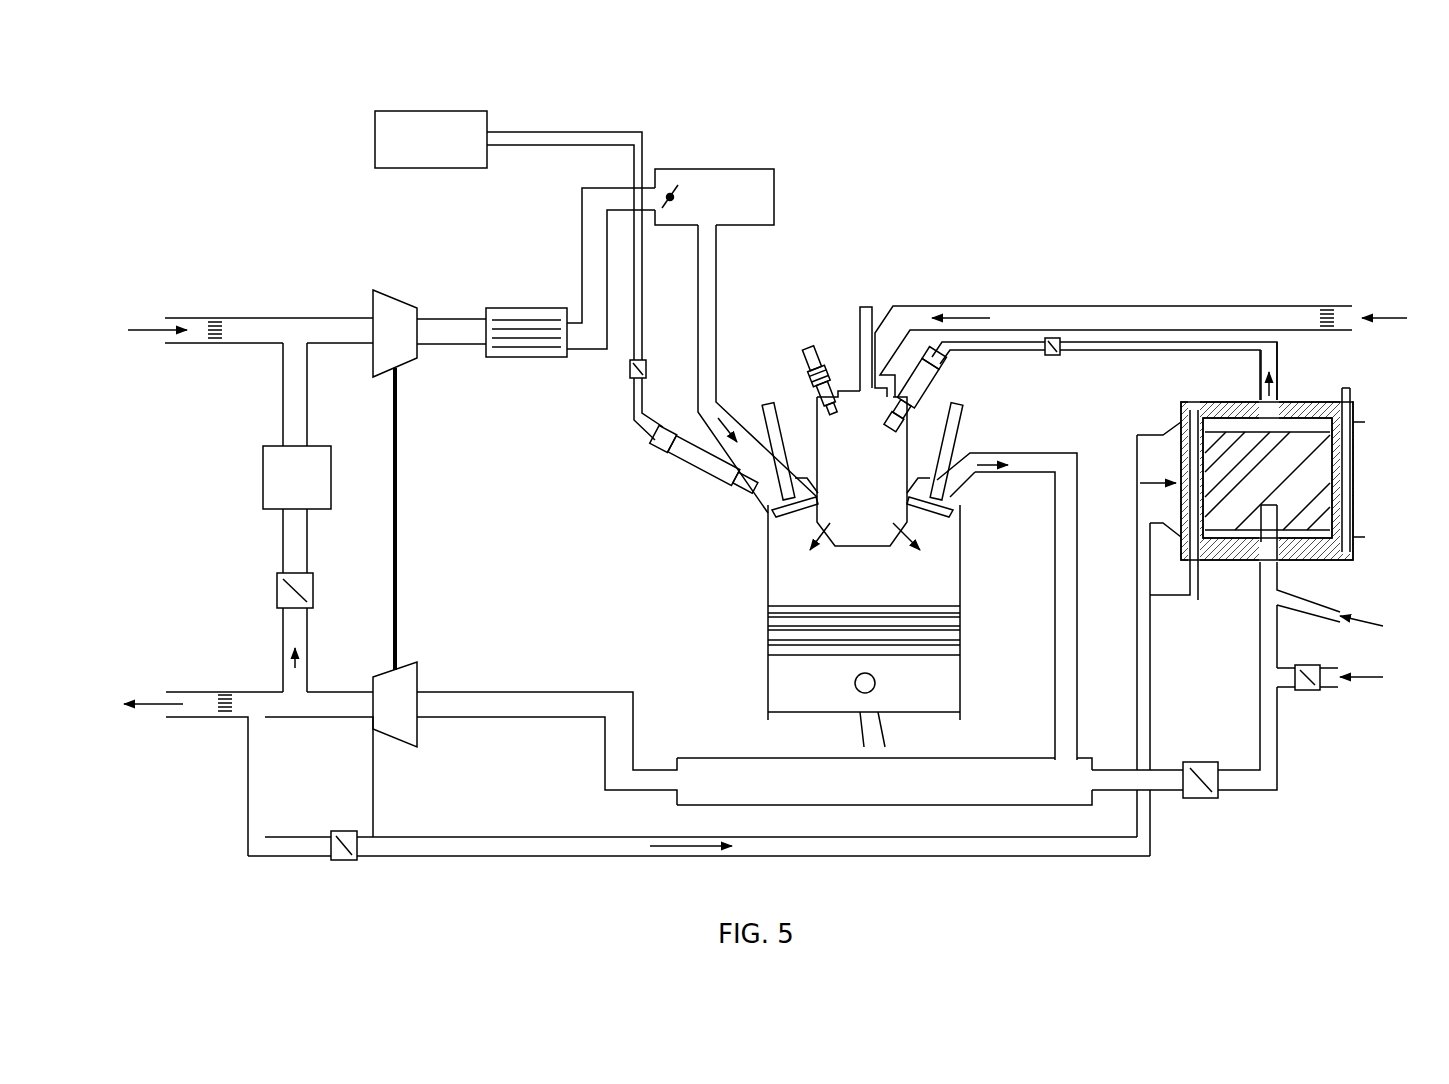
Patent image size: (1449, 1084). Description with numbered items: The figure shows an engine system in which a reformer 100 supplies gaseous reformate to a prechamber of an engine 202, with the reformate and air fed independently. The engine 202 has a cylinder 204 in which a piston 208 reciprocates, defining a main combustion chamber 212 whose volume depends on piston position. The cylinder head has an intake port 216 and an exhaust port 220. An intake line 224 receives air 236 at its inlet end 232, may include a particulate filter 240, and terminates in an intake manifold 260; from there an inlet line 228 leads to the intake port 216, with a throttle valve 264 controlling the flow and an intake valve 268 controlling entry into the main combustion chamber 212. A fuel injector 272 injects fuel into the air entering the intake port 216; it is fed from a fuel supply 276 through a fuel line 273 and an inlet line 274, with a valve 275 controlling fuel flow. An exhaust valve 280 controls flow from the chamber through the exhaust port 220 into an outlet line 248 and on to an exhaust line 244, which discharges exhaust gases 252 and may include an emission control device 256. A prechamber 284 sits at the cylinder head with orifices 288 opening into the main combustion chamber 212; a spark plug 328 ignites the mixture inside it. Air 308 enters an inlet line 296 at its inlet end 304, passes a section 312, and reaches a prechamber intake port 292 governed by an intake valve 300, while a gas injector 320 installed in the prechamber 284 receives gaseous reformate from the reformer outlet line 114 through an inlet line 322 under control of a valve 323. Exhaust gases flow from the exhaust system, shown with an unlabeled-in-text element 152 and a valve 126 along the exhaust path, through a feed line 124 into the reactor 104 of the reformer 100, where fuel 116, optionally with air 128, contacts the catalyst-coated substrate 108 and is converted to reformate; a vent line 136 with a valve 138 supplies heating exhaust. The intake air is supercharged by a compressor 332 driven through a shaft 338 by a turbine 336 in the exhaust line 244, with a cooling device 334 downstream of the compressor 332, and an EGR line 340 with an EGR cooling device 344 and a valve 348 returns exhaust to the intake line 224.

The reformer 100 is at (1355, 413).
The reactor 104 is at (1330, 453).
The catalyst-coated substrate 108 is at (1325, 510).
The outlet line 114 is at (1279, 378).
The fuel 116 is at (1351, 600).
The feed line 124 is at (1240, 793).
The valve 126 is at (1200, 798).
The air 128 is at (1351, 648).
The vent line 136 is at (1152, 708).
The valve 138 is at (345, 860).
The exhaust passage 152 is at (718, 767).
The engine 202 is at (877, 288).
The engine cylinder 204 is at (767, 566).
The piston 208 is at (955, 610).
The main combustion chamber 212 is at (777, 590).
The intake port 216 is at (772, 514).
The exhaust port 220 is at (962, 522).
The intake line 224 is at (582, 253).
The inlet line 228 is at (710, 270).
The inlet end 232 is at (182, 318).
The air 236 is at (135, 330).
The particulate filter 240 is at (216, 340).
The exhaust line 244 is at (615, 790).
The outlet line 248 is at (1023, 460).
The exhaust gases 252 is at (133, 704).
The exhaust emission control device 256 is at (225, 692).
The intake manifold 260 is at (790, 196).
The throttle valve 264 is at (672, 192).
The intake valve 268 is at (767, 499).
The fuel injector 272 is at (682, 453).
The fuel line 273 is at (587, 130).
The inlet line 274 is at (632, 410).
The valve 275 is at (630, 367).
The fuel supply 276 is at (432, 125).
The exhaust valve 280 is at (945, 495).
The prechamber 284 is at (815, 415).
The orifices 288 is at (897, 528).
The intake port 292 is at (838, 392).
The inlet line 296 is at (940, 305).
The intake valve 300 is at (856, 387).
The inlet end 304 is at (1348, 308).
The air 308 is at (1405, 318).
The section 312 is at (1263, 306).
The gas injector 320 is at (930, 380).
The inlet line 322 is at (1113, 352).
The valve 323 is at (1052, 338).
The spark plug 328 is at (802, 360).
The compressor 332 is at (395, 298).
The cooling device 334 is at (505, 358).
The turbine 336 is at (397, 740).
The shaft 338 is at (397, 528).
The EGR line 340 is at (280, 429).
The EGR cooling device 344 is at (285, 477).
The valve 348 is at (277, 588).